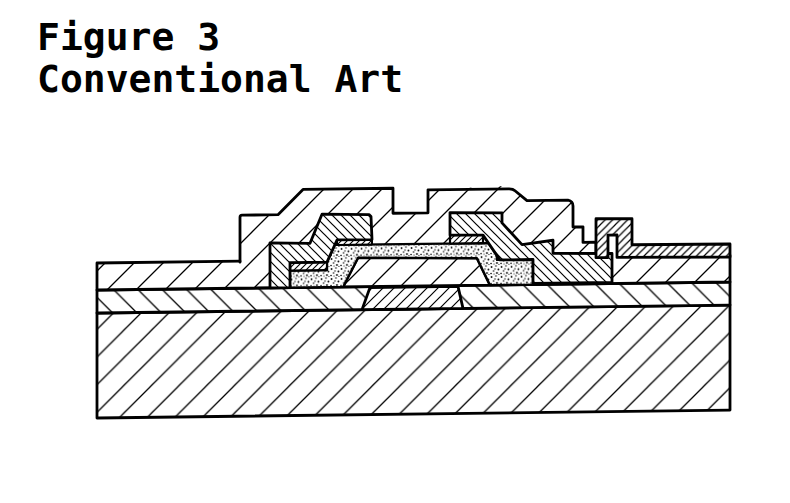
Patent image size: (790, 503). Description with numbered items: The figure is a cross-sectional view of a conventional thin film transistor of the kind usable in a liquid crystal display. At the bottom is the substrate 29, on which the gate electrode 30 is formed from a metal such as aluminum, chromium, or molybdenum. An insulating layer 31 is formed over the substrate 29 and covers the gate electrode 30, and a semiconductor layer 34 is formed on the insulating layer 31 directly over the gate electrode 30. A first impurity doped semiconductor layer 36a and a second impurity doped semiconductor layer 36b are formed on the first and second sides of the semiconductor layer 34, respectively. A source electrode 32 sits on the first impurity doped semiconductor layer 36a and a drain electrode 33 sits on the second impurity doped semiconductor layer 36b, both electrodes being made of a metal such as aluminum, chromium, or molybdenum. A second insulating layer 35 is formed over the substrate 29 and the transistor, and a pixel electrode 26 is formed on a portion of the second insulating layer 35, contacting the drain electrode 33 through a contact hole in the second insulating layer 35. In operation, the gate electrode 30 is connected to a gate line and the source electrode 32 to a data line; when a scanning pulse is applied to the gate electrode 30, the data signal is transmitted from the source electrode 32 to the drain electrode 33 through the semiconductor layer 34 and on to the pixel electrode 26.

The pixel electrode 26 is at (627, 226).
The substrate 29 is at (688, 395).
The gate electrode 30 is at (420, 304).
The insulating layer 31 is at (572, 306).
The source electrode 32 is at (307, 255).
The drain electrode 33 is at (521, 245).
The semiconductor layer 34 is at (320, 290).
The second insulating layer 35 is at (448, 199).
The first impurity doped semiconductor layer 36a is at (362, 216).
The second impurity doped semiconductor layer 36b is at (493, 248).